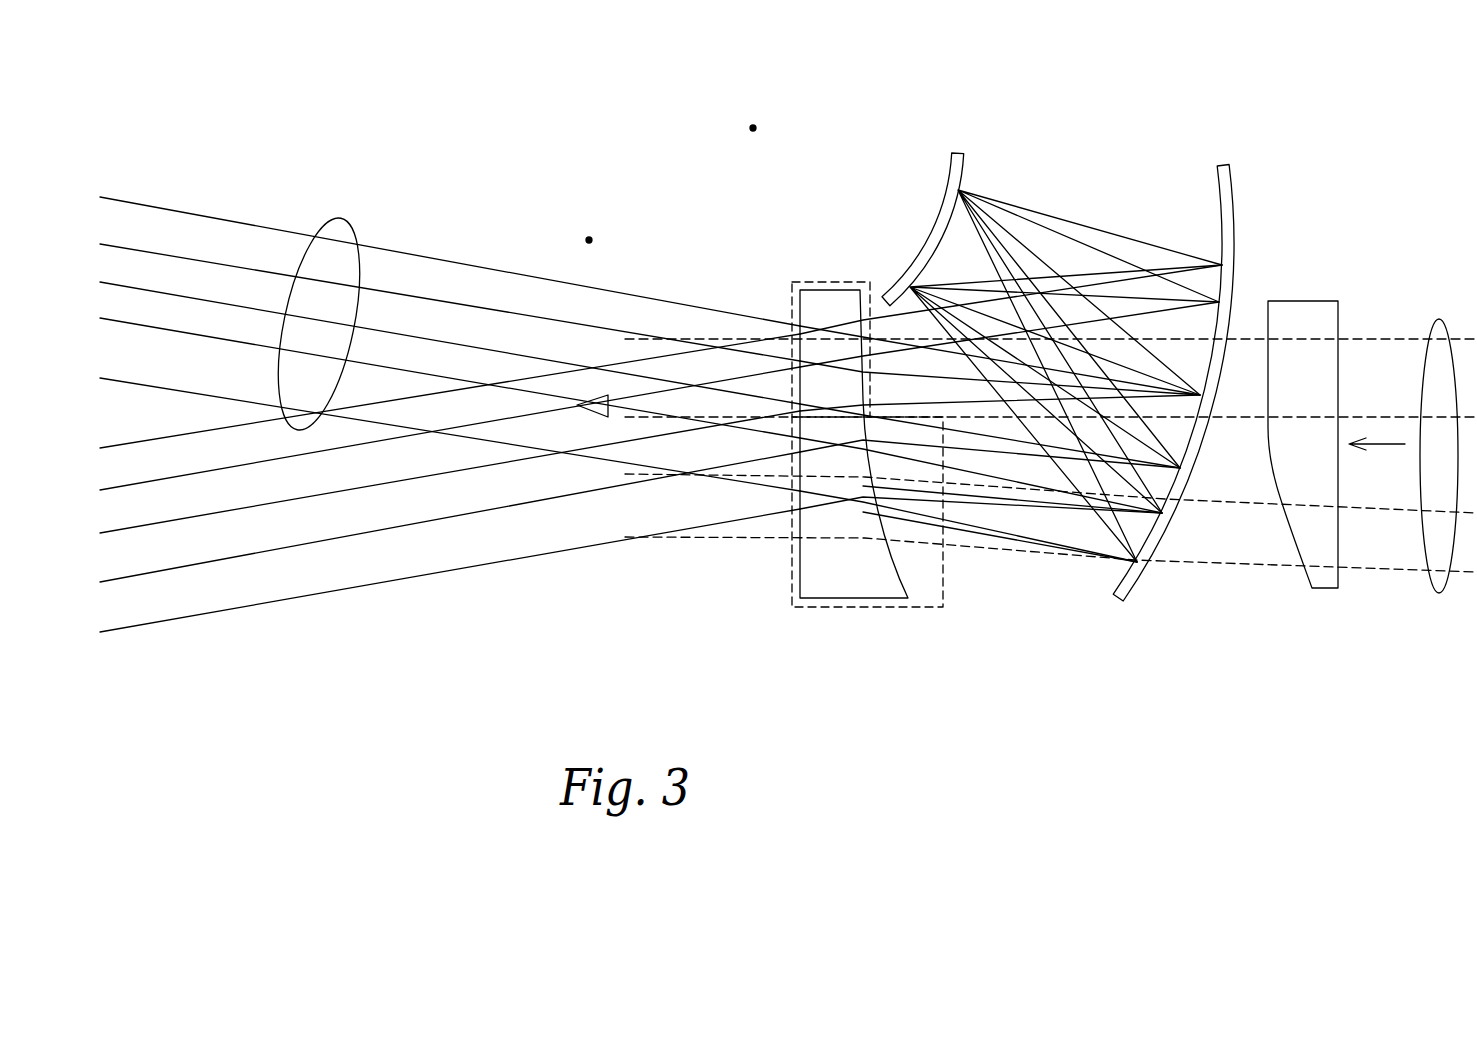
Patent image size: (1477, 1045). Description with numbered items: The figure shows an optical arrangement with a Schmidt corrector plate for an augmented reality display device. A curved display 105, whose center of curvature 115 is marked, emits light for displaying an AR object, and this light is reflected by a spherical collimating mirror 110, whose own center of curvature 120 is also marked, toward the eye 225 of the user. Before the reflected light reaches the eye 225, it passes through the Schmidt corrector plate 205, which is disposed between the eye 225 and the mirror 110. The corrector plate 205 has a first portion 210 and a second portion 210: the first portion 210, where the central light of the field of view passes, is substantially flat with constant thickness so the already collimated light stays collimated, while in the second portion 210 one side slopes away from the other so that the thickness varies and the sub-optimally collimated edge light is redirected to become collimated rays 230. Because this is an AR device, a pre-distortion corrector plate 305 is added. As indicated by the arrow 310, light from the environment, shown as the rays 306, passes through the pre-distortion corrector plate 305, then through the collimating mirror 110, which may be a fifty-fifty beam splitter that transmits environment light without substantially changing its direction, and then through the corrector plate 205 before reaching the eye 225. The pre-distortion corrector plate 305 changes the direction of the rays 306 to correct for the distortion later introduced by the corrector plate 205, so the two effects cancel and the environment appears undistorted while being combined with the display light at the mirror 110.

The display 105 is at (963, 125).
The spherical collimating mirror 110 is at (1245, 137).
The center of curvature of the display 115 is at (752, 127).
The center of curvature of the mirror 120 is at (597, 213).
The Schmidt corrector plate 205 is at (834, 625).
The first portion and second portion of the corrector plate 210 is at (852, 282).
The eye 225 is at (592, 412).
The collimated rays 230 is at (346, 188).
The pre-distortion corrector plate 305 is at (1280, 300).
The rays from the environment 306 is at (1440, 318).
The arrow 310 is at (1388, 448).